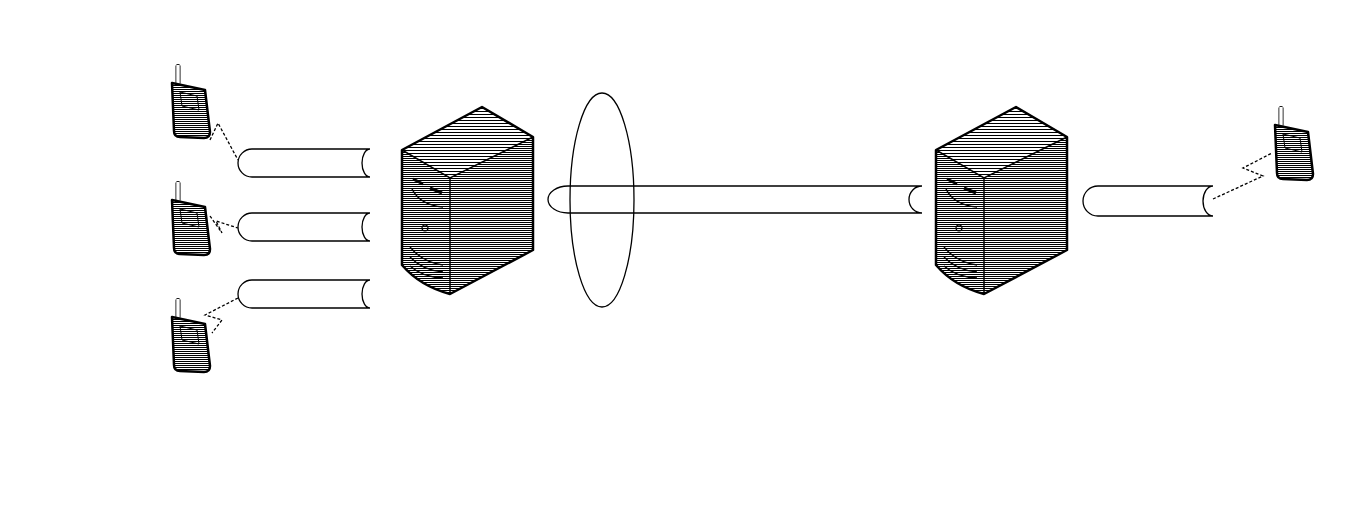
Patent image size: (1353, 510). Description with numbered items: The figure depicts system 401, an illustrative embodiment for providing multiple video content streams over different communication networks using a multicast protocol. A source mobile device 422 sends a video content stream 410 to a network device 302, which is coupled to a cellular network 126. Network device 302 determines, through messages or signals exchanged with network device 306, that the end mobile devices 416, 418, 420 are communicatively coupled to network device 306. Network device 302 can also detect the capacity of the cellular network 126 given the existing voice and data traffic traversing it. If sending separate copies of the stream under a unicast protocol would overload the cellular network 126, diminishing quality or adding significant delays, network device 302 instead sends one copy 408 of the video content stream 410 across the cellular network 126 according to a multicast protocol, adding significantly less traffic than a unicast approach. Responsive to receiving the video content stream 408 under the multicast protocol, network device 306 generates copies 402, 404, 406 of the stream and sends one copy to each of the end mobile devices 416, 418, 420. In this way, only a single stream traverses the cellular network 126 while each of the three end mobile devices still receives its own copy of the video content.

The communication system 401 is at (762, 376).
The end mobile device 420 is at (214, 64).
The end mobile device 418 is at (198, 196).
The end mobile device 416 is at (208, 358).
The source mobile device 422 is at (1285, 178).
The video content stream copy 406 is at (307, 148).
The video content stream copy 404 is at (307, 213).
The video content stream copy 402 is at (307, 280).
The multicast video content stream copy 408 is at (772, 186).
The video content stream 410 is at (1158, 185).
The network device 306 is at (452, 295).
The network device 302 is at (987, 295).
The cellular network 126 is at (597, 95).